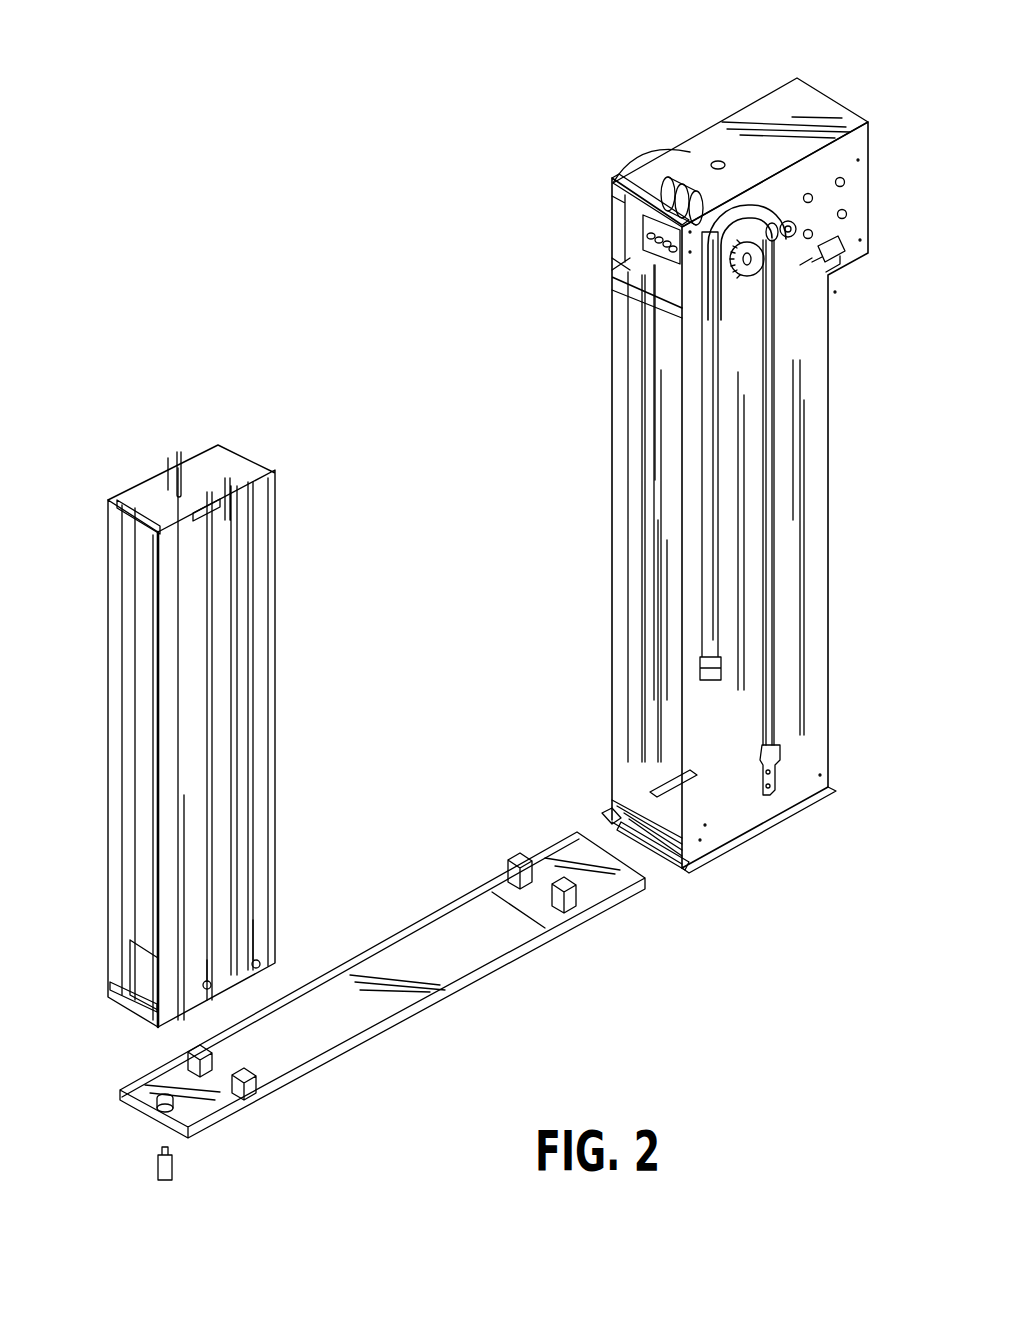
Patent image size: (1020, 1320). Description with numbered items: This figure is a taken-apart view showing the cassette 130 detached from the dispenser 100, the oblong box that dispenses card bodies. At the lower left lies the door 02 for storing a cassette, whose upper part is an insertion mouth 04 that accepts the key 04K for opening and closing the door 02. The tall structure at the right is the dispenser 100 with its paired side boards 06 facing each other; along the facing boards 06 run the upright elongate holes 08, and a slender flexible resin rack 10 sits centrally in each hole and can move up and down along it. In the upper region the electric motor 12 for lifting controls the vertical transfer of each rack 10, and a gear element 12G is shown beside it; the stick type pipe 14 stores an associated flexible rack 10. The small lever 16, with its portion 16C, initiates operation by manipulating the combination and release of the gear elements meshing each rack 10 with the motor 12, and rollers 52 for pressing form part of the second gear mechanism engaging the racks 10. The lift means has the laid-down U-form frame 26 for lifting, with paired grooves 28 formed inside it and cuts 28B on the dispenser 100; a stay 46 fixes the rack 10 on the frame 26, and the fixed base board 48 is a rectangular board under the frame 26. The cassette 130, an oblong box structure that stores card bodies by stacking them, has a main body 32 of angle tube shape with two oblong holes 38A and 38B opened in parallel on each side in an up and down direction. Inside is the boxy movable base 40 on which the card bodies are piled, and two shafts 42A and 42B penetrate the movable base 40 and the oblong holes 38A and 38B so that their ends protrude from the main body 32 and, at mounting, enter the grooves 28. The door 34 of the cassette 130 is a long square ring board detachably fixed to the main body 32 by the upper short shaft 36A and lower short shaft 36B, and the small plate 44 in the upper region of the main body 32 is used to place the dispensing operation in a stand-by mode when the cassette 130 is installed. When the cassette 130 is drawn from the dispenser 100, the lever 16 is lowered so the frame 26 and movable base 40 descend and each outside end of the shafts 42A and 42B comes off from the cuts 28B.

The dispenser 100 is at (844, 64).
The cassette 130 is at (209, 265).
The door 02 is at (445, 968).
The insertion mouth 04 is at (160, 1115).
The key 04K is at (175, 1165).
The side boards 06 is at (655, 372).
The upright elongate holes 08 is at (765, 652).
The flexible rack 10 is at (774, 553).
The electric motor 12 is at (733, 278).
The pulley drum 12G is at (692, 190).
The stick type pipe 14 is at (645, 152).
The lever 16 is at (630, 228).
The cover window 16C is at (645, 262).
The frame 26 is at (657, 750).
The grooves 28 is at (645, 770).
The cuts 28B is at (645, 777).
The fixed base board 48 is at (633, 803).
The stay 46 is at (770, 787).
The rollers 52 is at (794, 222).
The main body 32 is at (182, 470).
The plate 44 is at (236, 470).
The upper short shaft 36A is at (128, 500).
The lower short shaft 36B is at (115, 985).
The oblong hole 38A is at (205, 595).
The oblong hole 38B is at (250, 600).
The door 34 is at (130, 738).
The movable base 40 is at (150, 955).
The shaft 42A is at (150, 1005).
The shaft 42B is at (262, 960).